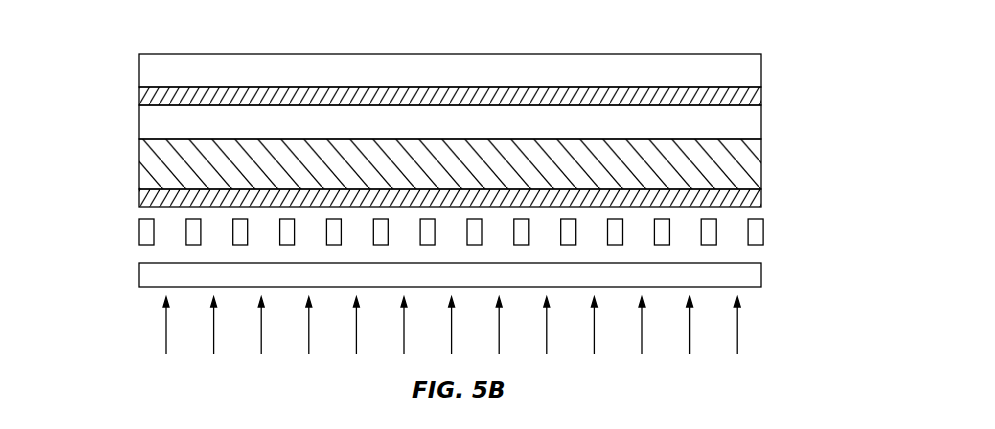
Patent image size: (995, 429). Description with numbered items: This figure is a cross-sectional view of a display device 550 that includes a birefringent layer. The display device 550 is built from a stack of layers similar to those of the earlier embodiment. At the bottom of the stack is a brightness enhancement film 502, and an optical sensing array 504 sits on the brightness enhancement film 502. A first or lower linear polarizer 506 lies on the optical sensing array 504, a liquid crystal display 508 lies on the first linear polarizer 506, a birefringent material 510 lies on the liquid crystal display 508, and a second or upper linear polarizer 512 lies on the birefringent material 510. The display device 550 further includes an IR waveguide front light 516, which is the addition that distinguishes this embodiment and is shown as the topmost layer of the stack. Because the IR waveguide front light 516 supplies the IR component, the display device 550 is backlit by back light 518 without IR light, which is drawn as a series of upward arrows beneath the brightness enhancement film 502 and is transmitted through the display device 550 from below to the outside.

The display device 550 is at (109, 80).
The IR waveguide front light 516 is at (762, 68).
The second or upper linear polarizer 512 is at (762, 100).
The birefringent material 510 is at (762, 125).
The liquid crystal display 508 is at (762, 162).
The first or lower linear polarizer 506 is at (762, 195).
The optical sensing array 504 is at (762, 232).
The brightness enhancement film 502 is at (762, 272).
The back light without IR light 518 is at (355, 324).